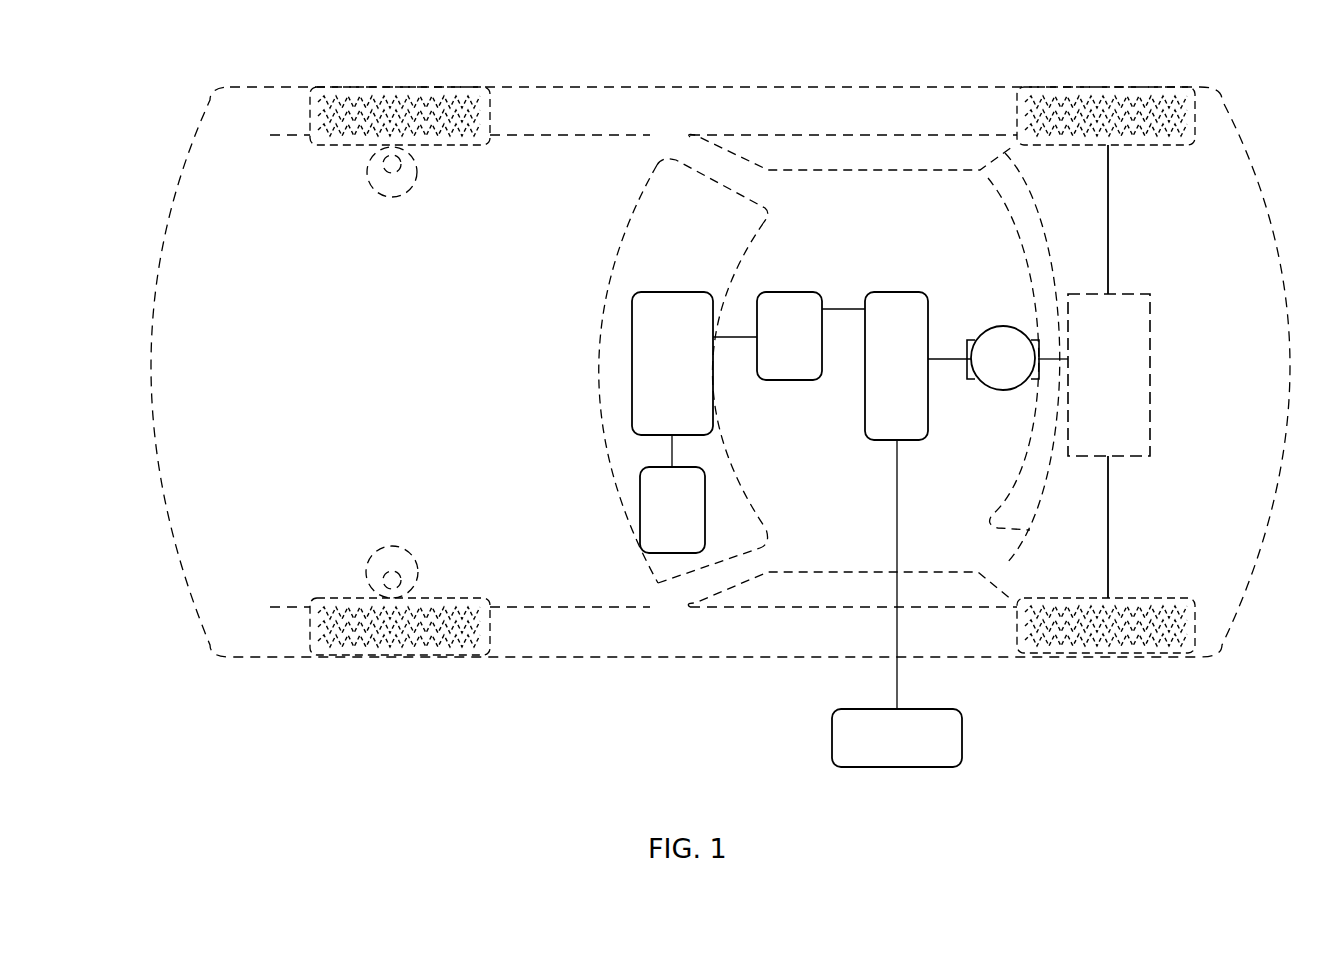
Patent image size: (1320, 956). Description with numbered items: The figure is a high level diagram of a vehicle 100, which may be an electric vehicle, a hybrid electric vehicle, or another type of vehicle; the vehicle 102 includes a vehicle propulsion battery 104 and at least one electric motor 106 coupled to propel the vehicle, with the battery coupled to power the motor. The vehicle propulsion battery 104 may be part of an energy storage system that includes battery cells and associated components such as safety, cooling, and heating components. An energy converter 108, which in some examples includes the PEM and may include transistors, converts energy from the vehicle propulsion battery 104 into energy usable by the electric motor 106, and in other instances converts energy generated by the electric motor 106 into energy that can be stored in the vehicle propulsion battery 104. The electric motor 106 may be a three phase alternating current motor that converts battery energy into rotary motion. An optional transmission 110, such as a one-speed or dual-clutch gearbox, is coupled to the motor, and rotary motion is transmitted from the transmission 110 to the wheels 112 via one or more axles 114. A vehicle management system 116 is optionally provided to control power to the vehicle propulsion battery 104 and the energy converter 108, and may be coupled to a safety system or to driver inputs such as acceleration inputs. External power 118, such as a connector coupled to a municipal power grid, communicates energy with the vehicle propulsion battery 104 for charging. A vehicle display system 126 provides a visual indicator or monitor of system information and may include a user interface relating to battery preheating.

The vehicle 100 is at (536, 74).
The vehicle 102 is at (735, 87).
The vehicle propulsion battery 104 is at (800, 292).
The electric motor 106 is at (1000, 327).
The energy converter 108 is at (895, 292).
The transmission 110 is at (1153, 352).
The wheels 112 is at (1140, 86).
The axles 114 is at (1108, 222).
The vehicle management system 116 is at (678, 292).
The external power 118 is at (832, 718).
The vehicle display system 126 is at (640, 510).